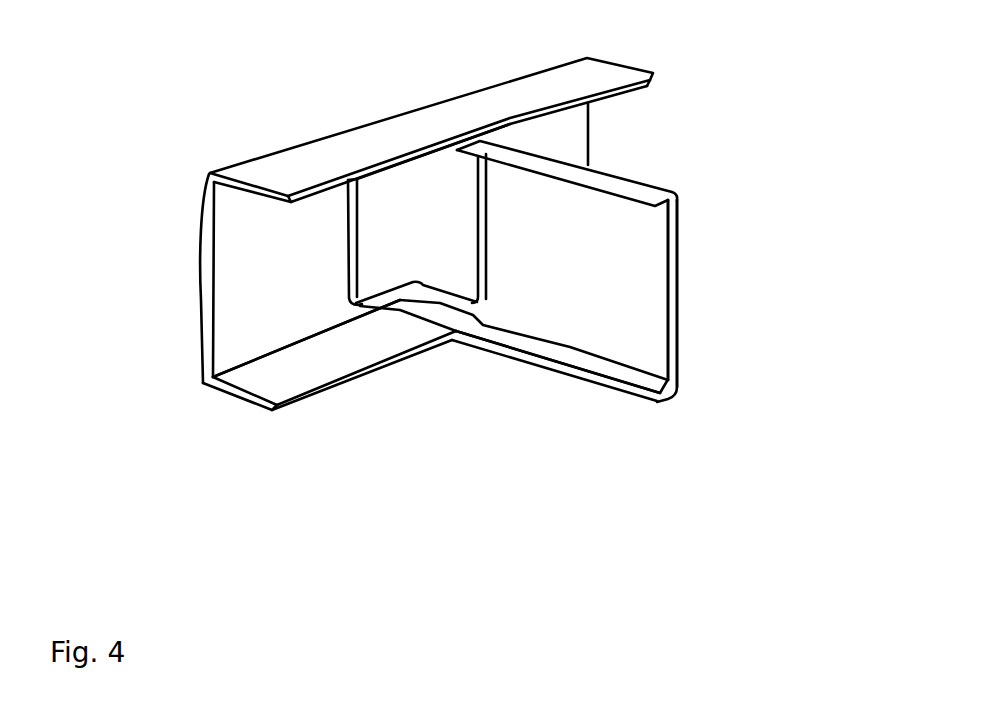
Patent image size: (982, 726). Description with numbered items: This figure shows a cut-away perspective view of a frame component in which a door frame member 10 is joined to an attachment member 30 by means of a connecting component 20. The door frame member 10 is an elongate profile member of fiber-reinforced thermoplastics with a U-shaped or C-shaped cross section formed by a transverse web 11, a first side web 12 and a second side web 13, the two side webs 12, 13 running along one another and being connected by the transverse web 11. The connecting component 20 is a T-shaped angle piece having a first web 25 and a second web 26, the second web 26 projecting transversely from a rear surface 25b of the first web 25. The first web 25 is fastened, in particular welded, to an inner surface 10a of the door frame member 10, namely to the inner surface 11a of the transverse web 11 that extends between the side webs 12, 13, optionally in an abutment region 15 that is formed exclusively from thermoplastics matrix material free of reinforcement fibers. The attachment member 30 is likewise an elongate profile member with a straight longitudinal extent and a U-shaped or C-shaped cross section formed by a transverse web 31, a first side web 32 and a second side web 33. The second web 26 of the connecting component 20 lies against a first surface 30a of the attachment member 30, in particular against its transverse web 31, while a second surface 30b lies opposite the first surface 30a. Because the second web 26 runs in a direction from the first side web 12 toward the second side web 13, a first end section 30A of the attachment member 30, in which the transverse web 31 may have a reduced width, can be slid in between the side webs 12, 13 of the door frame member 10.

The door frame member 10 is at (360, 297).
The transverse web 11 is at (203, 276).
The first side web 12 is at (243, 405).
The second side web 13 is at (250, 187).
The inner surface 10a is at (280, 290).
The inner surface of the transverse web 11a is at (280, 290).
The abutment region 15 is at (343, 210).
The connecting component 20 is at (403, 294).
The first web 25 is at (372, 242).
The rear surface 25b is at (380, 200).
The second web 26 is at (487, 297).
The attachment member 30 is at (634, 294).
The first surface 30a is at (628, 318).
The second surface 30b is at (682, 264).
The first end section 30A is at (427, 331).
The transverse web 31 is at (682, 283).
The first side web 32 is at (640, 385).
The second side web 33 is at (640, 190).